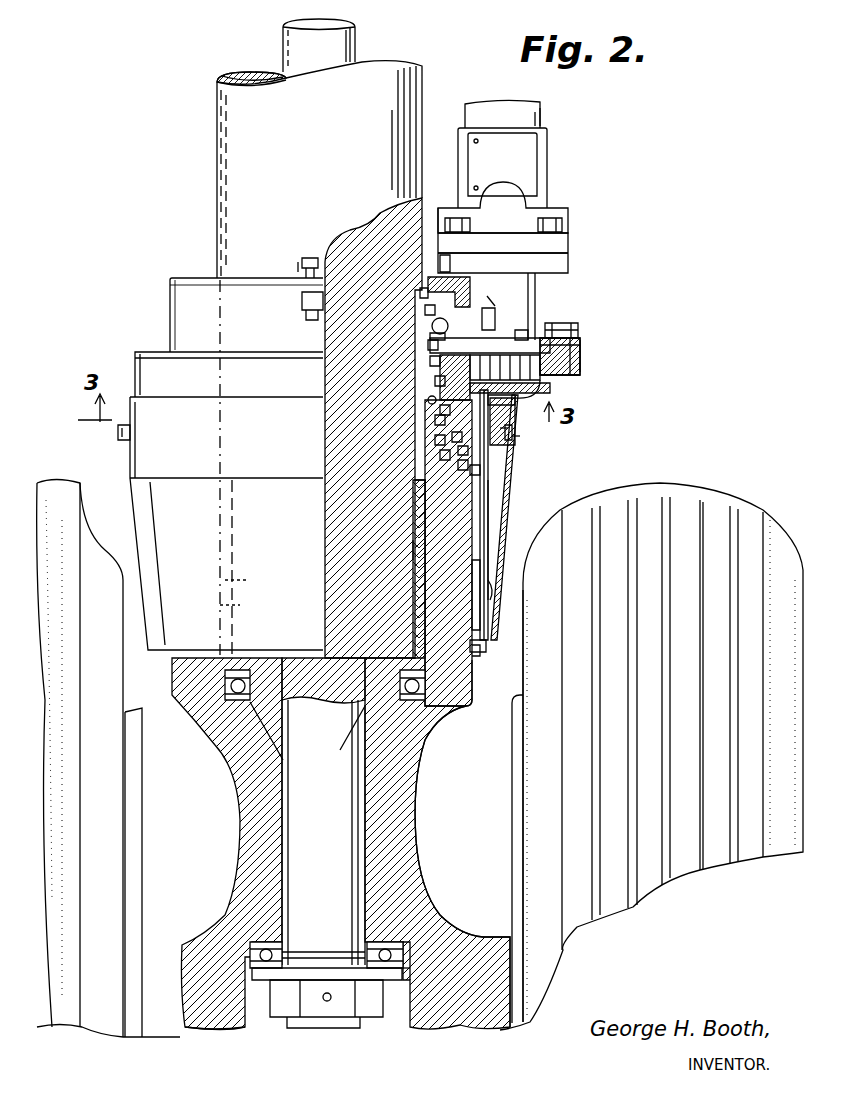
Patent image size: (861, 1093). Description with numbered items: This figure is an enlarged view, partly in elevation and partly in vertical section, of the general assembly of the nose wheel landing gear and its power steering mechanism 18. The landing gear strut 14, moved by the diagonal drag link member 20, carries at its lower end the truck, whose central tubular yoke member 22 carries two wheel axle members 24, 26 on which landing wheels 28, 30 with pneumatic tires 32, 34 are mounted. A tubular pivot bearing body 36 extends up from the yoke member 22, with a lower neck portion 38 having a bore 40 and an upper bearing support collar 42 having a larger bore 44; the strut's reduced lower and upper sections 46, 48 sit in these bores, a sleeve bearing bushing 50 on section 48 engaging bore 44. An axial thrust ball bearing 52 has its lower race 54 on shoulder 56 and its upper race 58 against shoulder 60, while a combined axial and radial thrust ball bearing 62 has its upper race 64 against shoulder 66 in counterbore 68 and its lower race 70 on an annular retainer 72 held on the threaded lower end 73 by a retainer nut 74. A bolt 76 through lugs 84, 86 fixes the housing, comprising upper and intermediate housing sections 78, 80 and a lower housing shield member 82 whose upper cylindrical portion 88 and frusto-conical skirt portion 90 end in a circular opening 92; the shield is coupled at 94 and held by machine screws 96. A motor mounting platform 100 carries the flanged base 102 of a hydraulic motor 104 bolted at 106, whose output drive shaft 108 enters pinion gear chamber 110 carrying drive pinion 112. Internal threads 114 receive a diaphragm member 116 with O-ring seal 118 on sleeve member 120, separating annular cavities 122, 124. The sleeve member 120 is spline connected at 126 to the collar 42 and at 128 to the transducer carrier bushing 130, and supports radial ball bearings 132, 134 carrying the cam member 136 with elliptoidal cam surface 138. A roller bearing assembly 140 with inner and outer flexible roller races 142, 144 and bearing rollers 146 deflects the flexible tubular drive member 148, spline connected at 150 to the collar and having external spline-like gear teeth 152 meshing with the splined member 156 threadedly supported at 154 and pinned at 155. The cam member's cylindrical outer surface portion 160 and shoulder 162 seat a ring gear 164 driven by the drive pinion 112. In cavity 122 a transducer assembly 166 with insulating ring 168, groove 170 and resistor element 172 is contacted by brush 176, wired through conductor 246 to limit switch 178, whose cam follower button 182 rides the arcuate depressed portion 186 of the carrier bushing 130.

The strut 14 is at (225, 118).
The power steering mechanism 18 is at (660, 348).
The drag link member 20 is at (357, 45).
The yoke member 22 is at (418, 885).
The axle member 24 is at (495, 946).
The axle member 26 is at (165, 950).
The landing wheel 28 is at (143, 775).
The landing wheel 30 is at (512, 750).
The pneumatic tire 32 is at (60, 490).
The pneumatic tire 34 is at (750, 503).
The pivot bearing body 36 is at (482, 693).
The neck portion 38 is at (238, 866).
The bore 40 is at (360, 803).
The bearing support collar 42 is at (490, 490).
The bore 44 is at (421, 518).
The lower section of reduced diameter 46 is at (282, 825).
The upper section of reduced diameter 48 is at (410, 545).
The sleeve bearing bushing 50 is at (220, 605).
The axial thrust ball bearing 52 is at (220, 690).
The lower race 54 is at (440, 704).
The annular shoulder 56 is at (385, 715).
The upper race 58 is at (425, 682).
The annular shoulder 60 is at (412, 665).
The combined axial and radial thrust ball bearing 62 is at (427, 963).
The upper race 64 is at (255, 946).
The annular shoulder 66 is at (395, 944).
The counterbore 68 is at (245, 1034).
The lower race 70 is at (405, 972).
The annular retainer 72 is at (262, 982).
The threaded lower end 73 is at (350, 955).
The retainer nut 74 is at (290, 1017).
The bolt 76 is at (318, 252).
The upper housing section 78 is at (170, 302).
The intermediate housing section 80 is at (135, 354).
The lower housing shield member 82 is at (130, 478).
The lug 84 is at (296, 298).
The lug 86 is at (298, 262).
The upper cylindrical portion 88 is at (520, 480).
The frusto-conical skirt portion 90 is at (497, 588).
The circular opening 92 is at (486, 648).
The coupling 94 is at (507, 442).
The machine screw 96 is at (118, 432).
The motor mounting platform 100 is at (582, 360).
The flanged base 102 is at (582, 336).
The hydraulic motor 104 is at (548, 170).
The bolt 106 is at (566, 326).
The output drive shaft 108 is at (560, 340).
The pinion gear chamber 110 is at (570, 385).
The drive pinion 112 is at (580, 372).
The internal threads 114 is at (465, 345).
The diaphragm member 116 is at (440, 396).
The O-ring seal 118 is at (440, 372).
The sleeve member 120 is at (436, 420).
The annular cavity 122 is at (475, 279).
The annular cavity 124 is at (425, 500).
The spline connection 126 is at (430, 480).
The spline connection 128 is at (430, 338).
The transducer carrier bushing 130 is at (432, 326).
The radial ball bearing 132 is at (432, 404).
The radial ball bearing 134 is at (441, 455).
The cam member 136 is at (436, 440).
The elliptoidal cam surface 138 is at (454, 440).
The roller bearing assembly 140 is at (460, 451).
The inner flexible roller race 142 is at (460, 466).
The outer flexible roller race 144 is at (478, 470).
The bearing roller 146 is at (442, 412).
The tubular drive member 148 is at (498, 522).
The spline connection 150 is at (500, 560).
The spline-like gear teeth 152 is at (505, 460).
The threaded support 154 is at (500, 430).
The radial pin 155 is at (520, 440).
The splined member 156 is at (505, 400).
The cylindrical outer surface portion 160 is at (520, 335).
The annular shoulder 162 is at (540, 390).
The ring gear 164 is at (565, 346).
The transducer assembly 166 is at (428, 345).
The insulating ring 168 is at (432, 360).
The groove 170 is at (470, 300).
The resistor element 172 is at (436, 380).
The brush 176 is at (486, 322).
The limit switch 178 is at (450, 272).
The cam follower button 182 is at (420, 292).
The arcuate depressed portion 186 is at (425, 310).
The conductor 246 is at (500, 318).